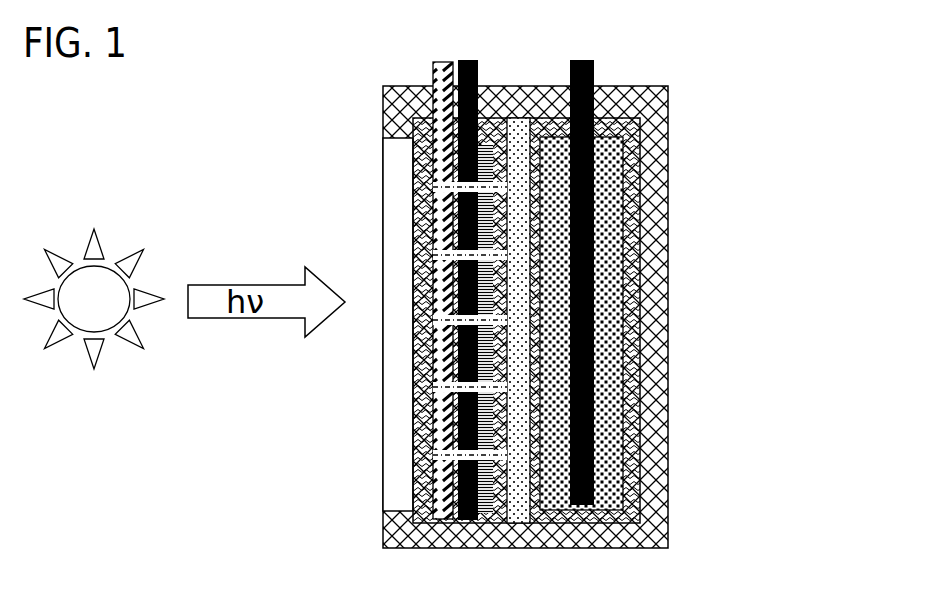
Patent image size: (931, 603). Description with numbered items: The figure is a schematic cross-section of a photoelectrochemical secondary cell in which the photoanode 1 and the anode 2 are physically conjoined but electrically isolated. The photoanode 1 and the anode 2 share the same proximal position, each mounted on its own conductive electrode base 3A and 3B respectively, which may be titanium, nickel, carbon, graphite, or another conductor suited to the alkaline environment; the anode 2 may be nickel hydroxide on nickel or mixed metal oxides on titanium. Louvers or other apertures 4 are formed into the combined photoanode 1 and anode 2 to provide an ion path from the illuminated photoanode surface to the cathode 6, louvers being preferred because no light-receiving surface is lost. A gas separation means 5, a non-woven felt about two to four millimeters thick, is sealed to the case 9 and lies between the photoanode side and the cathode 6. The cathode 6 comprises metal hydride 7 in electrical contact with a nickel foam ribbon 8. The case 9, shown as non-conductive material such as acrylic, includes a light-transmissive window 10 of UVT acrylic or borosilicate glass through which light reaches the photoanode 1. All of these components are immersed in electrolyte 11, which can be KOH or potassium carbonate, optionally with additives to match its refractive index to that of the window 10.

The photoanode 1 is at (446, 262).
The anode 2 is at (576, 258).
The conductive electrode base 3A is at (354, 286).
The conductive electrode base 3B is at (418, 265).
The louvers or other apertures 4 is at (352, 363).
The gas separation means 5 is at (397, 355).
The cathode 6 is at (715, 82).
The metal hydride 7 is at (700, 311).
The nickel foam ribbon 8 is at (715, 311).
The case 9 is at (624, 317).
The light-transmissive window 10 is at (302, 324).
The electrolyte 11 is at (643, 320).